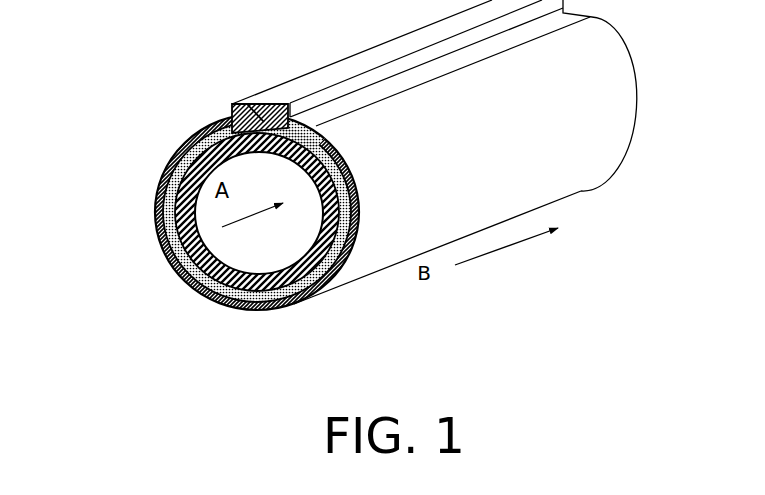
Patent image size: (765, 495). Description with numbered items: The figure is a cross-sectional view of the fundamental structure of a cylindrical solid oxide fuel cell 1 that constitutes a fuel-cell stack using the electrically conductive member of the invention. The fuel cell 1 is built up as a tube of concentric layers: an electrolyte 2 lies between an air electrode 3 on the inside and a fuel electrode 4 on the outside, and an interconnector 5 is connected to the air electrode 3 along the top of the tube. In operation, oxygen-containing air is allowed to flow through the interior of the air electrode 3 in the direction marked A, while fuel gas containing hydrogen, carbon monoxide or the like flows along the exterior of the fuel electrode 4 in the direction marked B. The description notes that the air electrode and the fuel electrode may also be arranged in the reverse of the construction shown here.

The fuel cell 1 is at (351, 177).
The electrolyte 2 is at (173, 260).
The air electrode 3 is at (207, 282).
The fuel electrode 4 is at (160, 223).
The interconnector 5 is at (238, 103).